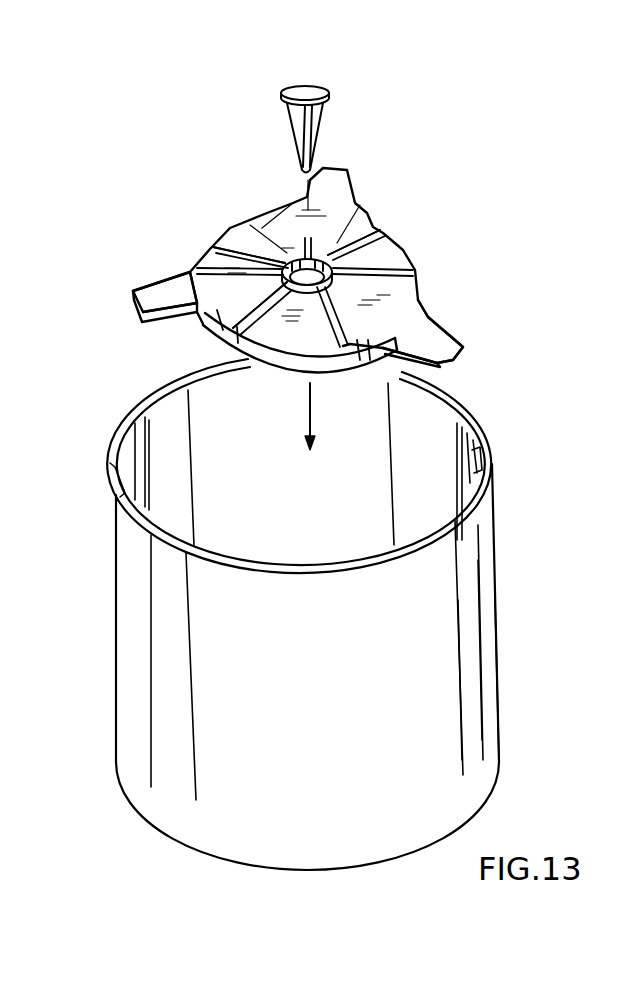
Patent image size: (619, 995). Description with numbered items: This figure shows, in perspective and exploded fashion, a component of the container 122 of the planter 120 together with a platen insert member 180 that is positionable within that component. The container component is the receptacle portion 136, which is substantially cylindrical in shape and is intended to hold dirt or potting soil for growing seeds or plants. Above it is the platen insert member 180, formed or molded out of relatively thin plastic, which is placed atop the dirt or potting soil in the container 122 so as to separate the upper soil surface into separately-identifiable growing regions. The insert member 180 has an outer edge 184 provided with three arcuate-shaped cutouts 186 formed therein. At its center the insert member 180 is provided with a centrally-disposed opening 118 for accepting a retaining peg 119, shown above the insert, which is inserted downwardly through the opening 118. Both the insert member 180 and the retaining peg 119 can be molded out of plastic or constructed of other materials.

The retaining peg 119 is at (322, 132).
The platen insert member 180 is at (392, 248).
The centrally-disposed opening 118 is at (313, 241).
The arcuate-shaped cutouts 186 is at (228, 240).
The outer edge 184 is at (130, 293).
The planter 120 is at (462, 583).
The container 122 is at (475, 647).
The receptacle portion 136 is at (470, 748).